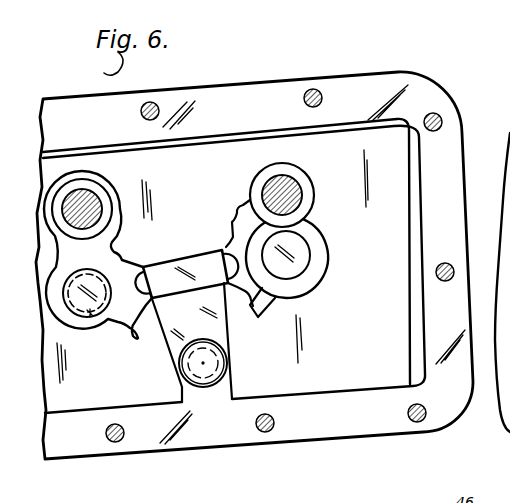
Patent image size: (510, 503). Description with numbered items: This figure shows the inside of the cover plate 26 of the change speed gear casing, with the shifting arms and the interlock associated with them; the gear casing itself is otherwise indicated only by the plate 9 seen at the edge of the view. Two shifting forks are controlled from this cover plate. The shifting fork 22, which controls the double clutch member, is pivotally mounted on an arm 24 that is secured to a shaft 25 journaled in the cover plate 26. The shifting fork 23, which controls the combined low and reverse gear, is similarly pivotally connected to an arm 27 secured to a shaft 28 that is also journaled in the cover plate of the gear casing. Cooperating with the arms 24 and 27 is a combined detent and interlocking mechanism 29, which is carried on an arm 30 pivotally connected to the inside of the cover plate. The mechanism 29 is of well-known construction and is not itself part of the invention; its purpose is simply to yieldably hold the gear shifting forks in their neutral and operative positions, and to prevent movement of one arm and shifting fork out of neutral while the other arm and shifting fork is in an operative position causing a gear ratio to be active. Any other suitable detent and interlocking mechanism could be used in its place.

The cover plate 9 is at (419, 69).
The shifting fork 22 is at (277, 173).
The shifting fork 23 is at (93, 197).
The arm 24 is at (310, 227).
The shaft 25 is at (298, 258).
The cover plate 26 is at (365, 78).
The arm 27 is at (113, 248).
The shaft 28 is at (90, 313).
The combined detent and interlocking mechanism 29 is at (192, 250).
The arm 30 is at (218, 332).